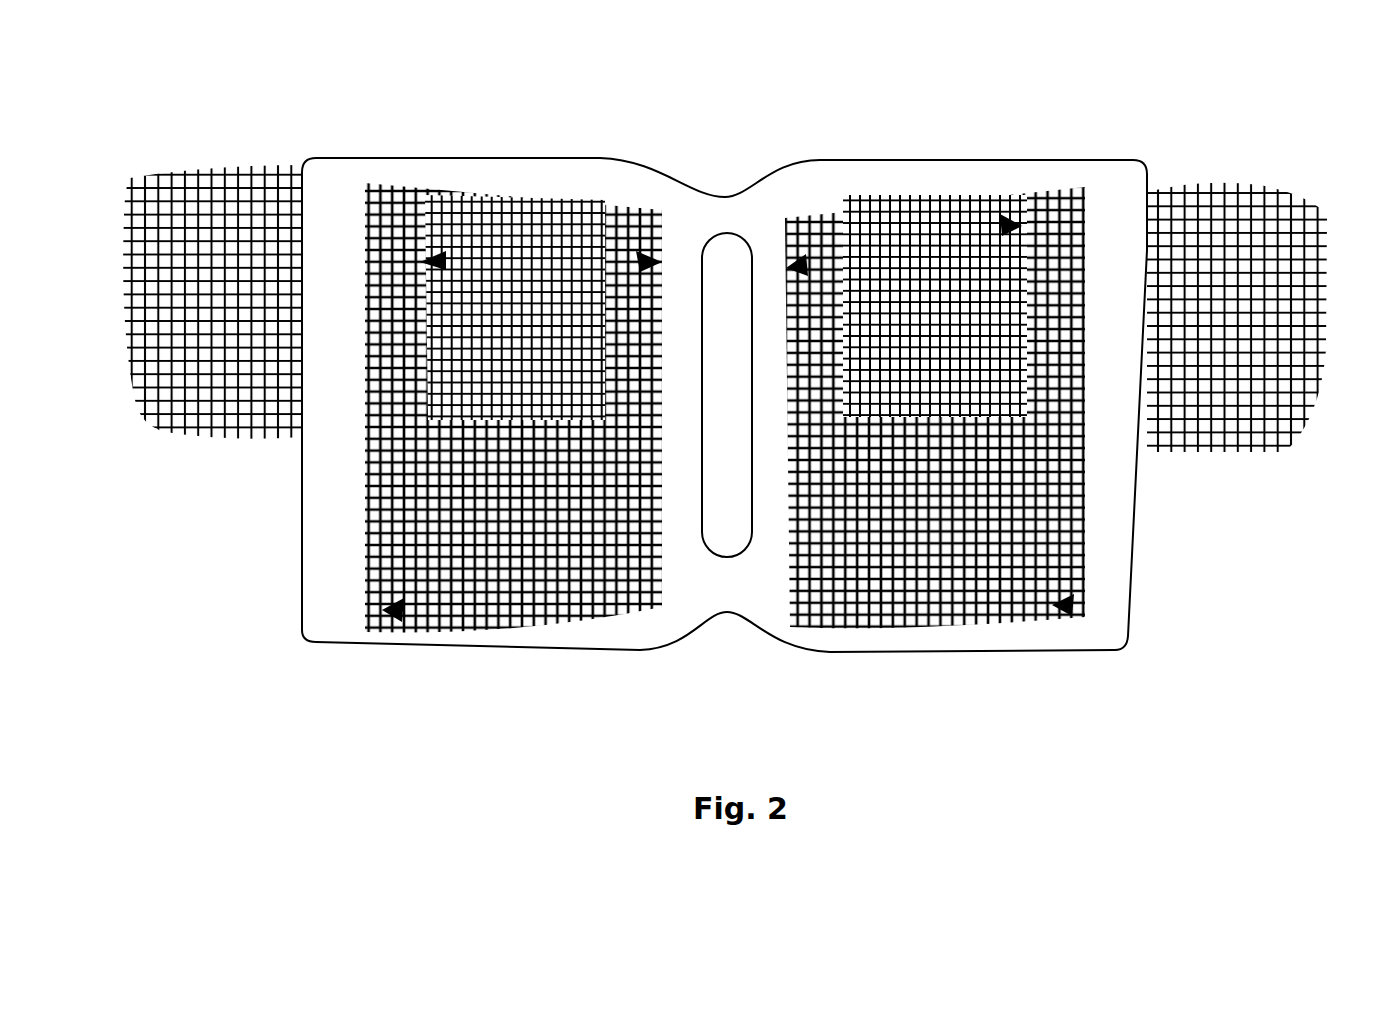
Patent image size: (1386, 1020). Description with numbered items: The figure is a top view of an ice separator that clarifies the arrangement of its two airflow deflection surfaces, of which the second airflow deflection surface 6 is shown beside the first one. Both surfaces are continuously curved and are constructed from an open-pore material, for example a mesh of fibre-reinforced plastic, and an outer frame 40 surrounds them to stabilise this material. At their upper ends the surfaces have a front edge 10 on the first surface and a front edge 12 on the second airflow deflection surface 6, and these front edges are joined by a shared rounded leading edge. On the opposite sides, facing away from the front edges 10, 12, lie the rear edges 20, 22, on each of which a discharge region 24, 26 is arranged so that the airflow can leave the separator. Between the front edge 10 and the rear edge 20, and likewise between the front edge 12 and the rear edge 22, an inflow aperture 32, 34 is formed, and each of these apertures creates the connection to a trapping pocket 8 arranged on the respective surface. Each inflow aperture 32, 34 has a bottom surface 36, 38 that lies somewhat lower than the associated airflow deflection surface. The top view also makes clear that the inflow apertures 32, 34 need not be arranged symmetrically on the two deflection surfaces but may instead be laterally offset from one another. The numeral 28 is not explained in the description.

The second airflow deflection surface 6 is at (1062, 575).
The trapping pocket 8 is at (743, 301).
The front edge 10 is at (630, 250).
The front edge 12 is at (820, 212).
The rear edge 20 is at (272, 180).
The rear edge 22 is at (1150, 213).
The discharge region 24 is at (390, 630).
The discharge region 26 is at (1062, 620).
The slot 28 is at (730, 283).
The inflow aperture 32 is at (438, 258).
The inflow aperture 34 is at (1010, 224).
The bottom surface 36 is at (503, 228).
The bottom surface 38 is at (948, 212).
The outer frame 40 is at (615, 620).